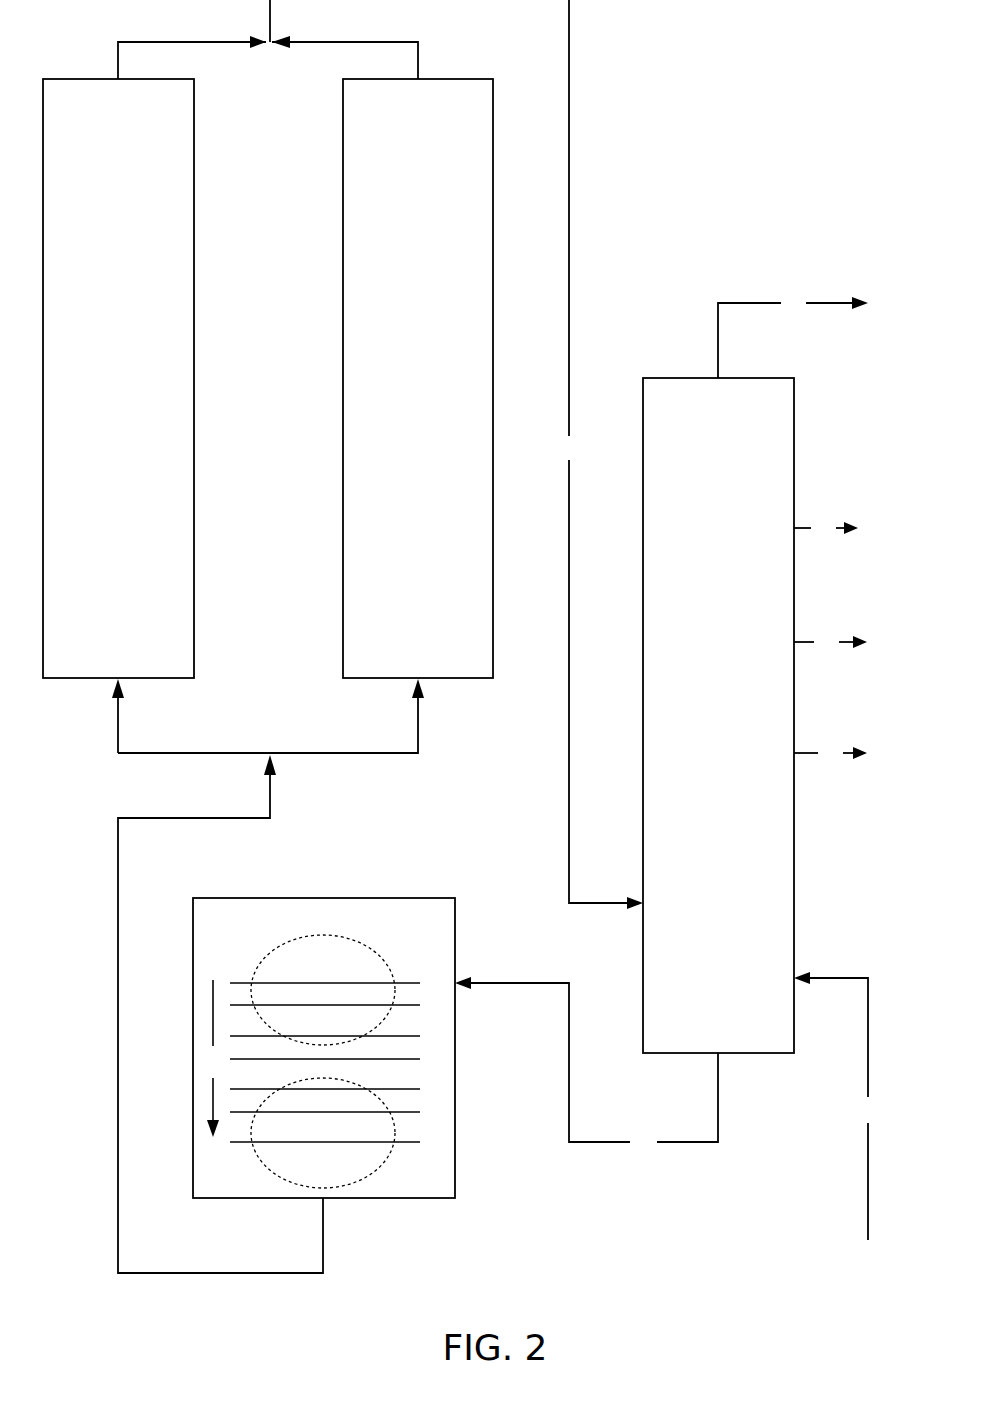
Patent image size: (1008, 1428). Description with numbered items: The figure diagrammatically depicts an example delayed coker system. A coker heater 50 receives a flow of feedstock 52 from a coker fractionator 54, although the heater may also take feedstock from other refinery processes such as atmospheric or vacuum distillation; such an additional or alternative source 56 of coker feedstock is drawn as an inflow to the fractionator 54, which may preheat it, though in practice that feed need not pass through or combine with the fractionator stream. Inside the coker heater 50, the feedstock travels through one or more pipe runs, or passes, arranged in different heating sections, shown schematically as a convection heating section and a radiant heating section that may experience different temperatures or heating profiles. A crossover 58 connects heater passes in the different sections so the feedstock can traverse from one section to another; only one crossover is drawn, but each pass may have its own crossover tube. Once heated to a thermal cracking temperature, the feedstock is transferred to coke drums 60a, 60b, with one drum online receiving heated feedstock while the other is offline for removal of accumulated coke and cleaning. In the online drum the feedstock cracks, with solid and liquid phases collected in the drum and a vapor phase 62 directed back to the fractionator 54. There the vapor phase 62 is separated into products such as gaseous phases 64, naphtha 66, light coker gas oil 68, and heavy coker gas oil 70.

The coker heater 50 is at (313, 924).
The flow of feedstock 52 is at (631, 1153).
The coker fractionator 54 is at (706, 728).
The additional and/or alternative source of coker feedstock 56 is at (837, 1106).
The crossover 58 is at (212, 1058).
The coke drum 60a is at (136, 389).
The coke drum 60b is at (436, 389).
The vapor phase 62 is at (600, 454).
The gaseous phases 64 is at (793, 334).
The naphtha 66 is at (826, 528).
The LCGO (light coker gas oil) 68 is at (830, 642).
The HCGO (heavy coker gas oil) 70 is at (830, 753).